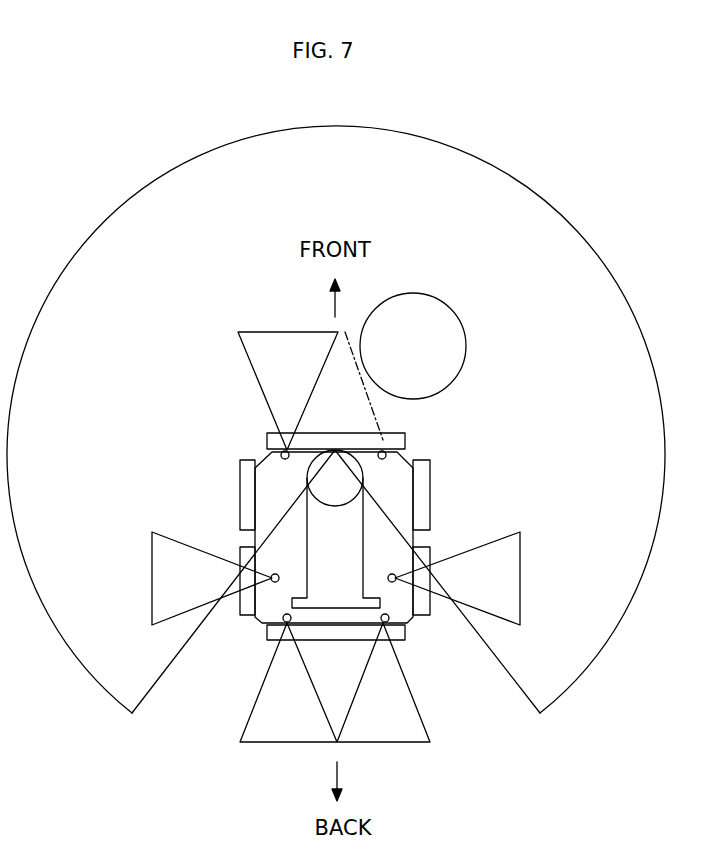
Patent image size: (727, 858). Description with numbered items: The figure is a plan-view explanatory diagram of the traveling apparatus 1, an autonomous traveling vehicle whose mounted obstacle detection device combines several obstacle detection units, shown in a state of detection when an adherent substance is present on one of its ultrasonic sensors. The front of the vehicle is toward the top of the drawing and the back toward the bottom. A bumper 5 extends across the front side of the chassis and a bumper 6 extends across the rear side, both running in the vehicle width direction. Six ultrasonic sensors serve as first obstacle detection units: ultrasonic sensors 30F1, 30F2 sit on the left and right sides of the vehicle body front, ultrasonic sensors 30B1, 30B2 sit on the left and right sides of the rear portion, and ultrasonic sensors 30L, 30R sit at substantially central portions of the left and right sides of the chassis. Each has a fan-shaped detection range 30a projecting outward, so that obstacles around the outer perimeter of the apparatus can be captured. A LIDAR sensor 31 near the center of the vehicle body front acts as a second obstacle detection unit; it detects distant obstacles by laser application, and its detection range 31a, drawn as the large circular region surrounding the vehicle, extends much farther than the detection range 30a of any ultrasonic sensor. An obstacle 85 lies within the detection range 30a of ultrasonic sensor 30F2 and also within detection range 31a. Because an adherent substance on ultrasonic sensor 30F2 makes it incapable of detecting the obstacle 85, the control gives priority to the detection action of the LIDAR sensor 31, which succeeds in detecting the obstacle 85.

The traveling apparatus 1 is at (450, 465).
The bumper 5 is at (337, 437).
The bumper 6 is at (335, 634).
The LIDAR sensor 31 is at (318, 445).
The detection range 31a is at (553, 216).
The obstacle 85 is at (432, 338).
The ultrasonic sensor 30F1 is at (262, 452).
The ultrasonic sensor 30F2 is at (400, 450).
The ultrasonic sensor 30L is at (268, 572).
The ultrasonic sensor 30R is at (398, 572).
The ultrasonic sensor 30B1 is at (262, 636).
The ultrasonic sensor 30B2 is at (410, 636).
The detection range 30a is at (283, 340).